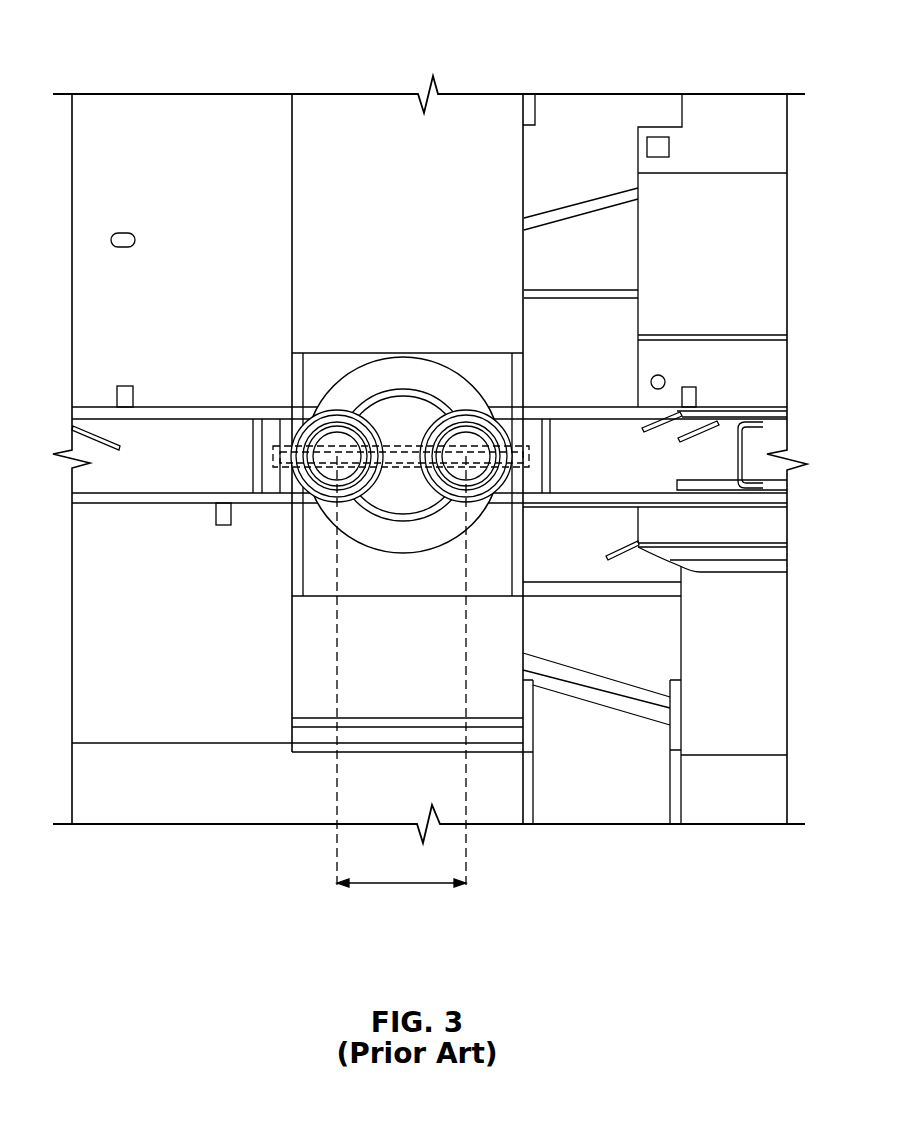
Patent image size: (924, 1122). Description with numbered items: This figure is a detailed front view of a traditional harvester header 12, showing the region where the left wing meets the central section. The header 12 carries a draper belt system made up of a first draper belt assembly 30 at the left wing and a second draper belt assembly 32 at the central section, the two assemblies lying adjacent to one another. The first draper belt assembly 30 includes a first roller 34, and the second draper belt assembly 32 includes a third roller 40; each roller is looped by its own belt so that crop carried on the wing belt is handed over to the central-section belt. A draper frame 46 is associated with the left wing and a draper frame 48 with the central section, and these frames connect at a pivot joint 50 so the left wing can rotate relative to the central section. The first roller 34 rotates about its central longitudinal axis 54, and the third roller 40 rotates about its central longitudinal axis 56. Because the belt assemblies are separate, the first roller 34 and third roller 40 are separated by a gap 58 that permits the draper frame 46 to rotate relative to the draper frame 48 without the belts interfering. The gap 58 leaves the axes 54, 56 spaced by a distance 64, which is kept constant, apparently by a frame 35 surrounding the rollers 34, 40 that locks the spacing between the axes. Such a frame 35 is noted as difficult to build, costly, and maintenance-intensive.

The header 12 is at (422, 66).
The first draper belt assembly 30 is at (762, 238).
The second draper belt assembly 32 is at (173, 349).
The first roller 34 is at (465, 432).
The frame 35 is at (288, 449).
The third roller 40 is at (330, 427).
The draper frame 46 is at (685, 335).
The draper frame 48 is at (292, 158).
The pivot joint 50 is at (384, 357).
The central longitudinal axis 54 is at (466, 454).
The central longitudinal axis 56 is at (337, 457).
The gap 58 is at (403, 438).
The distance 64 is at (433, 884).